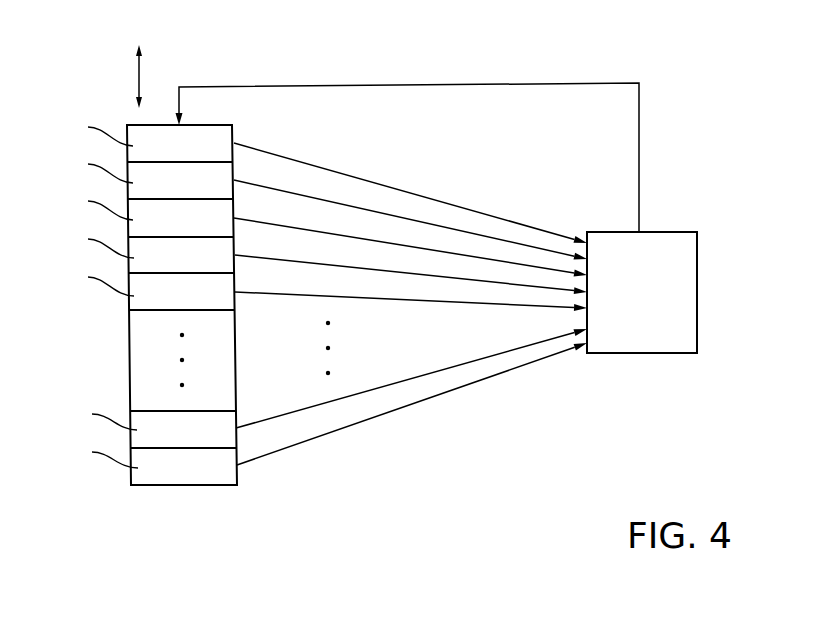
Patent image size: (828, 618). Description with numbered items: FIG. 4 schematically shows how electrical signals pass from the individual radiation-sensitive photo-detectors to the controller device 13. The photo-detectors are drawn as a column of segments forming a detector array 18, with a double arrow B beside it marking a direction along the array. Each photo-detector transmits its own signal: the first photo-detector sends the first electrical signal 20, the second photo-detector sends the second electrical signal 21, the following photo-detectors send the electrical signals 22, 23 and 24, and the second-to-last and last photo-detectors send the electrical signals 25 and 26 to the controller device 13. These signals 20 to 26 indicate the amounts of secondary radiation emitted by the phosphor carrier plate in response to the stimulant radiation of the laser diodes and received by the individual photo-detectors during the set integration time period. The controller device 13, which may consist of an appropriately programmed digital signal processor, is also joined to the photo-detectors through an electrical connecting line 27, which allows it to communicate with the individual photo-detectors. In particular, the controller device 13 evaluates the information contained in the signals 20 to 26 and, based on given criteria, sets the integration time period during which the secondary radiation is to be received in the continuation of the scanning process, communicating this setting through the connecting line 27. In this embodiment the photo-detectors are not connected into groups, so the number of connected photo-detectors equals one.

The controller device 13 is at (690, 272).
The photodiode array 18 is at (182, 497).
The first electrical signal 20 is at (308, 163).
The second electrical signal 21 is at (358, 205).
The electrical signal 22 is at (400, 245).
The electrical signal 23 is at (450, 277).
The electrical signal 24 is at (497, 303).
The electrical signal 25 is at (368, 391).
The electrical signal 26 is at (433, 396).
The electrical connecting line 27 is at (393, 85).
The beam displacement direction B is at (137, 77).